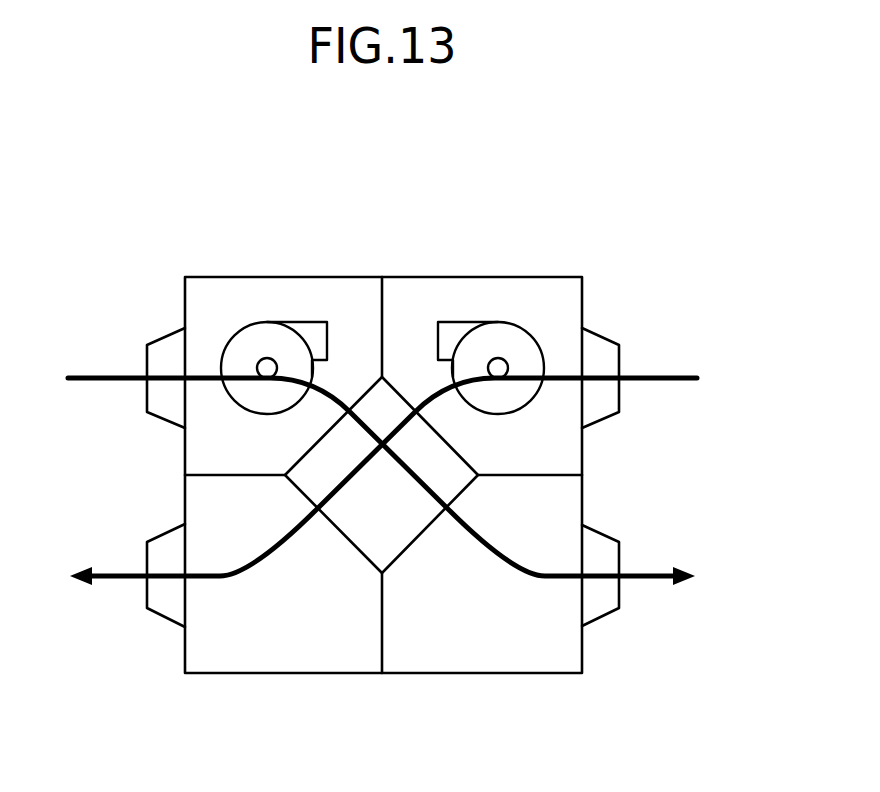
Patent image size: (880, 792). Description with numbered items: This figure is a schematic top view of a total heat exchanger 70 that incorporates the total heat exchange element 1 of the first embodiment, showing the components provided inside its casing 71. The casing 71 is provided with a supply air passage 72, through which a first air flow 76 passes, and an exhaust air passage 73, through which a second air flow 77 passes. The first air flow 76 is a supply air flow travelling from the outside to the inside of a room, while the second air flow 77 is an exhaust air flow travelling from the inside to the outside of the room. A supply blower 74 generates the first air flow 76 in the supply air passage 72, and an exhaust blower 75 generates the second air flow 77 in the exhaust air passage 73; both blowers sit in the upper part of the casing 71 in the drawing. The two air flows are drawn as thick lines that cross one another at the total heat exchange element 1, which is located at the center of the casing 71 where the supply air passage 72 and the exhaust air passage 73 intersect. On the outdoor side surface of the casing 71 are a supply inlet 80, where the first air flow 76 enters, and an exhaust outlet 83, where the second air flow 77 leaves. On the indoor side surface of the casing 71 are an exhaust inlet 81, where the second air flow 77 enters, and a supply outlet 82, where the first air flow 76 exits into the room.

The total heat exchanger 70 is at (608, 214).
The casing 71 is at (222, 675).
The supply air passage 72 is at (352, 292).
The exhaust air passage 73 is at (560, 292).
The total heat exchange element 1 is at (394, 405).
The supply blower 74 is at (273, 322).
The exhaust blower 75 is at (493, 321).
The first air flow 76 is at (93, 375).
The second air flow 77 is at (673, 375).
The supply inlet 80 is at (168, 345).
The exhaust inlet 81 is at (598, 345).
The supply outlet 82 is at (598, 607).
The exhaust outlet 83 is at (168, 607).